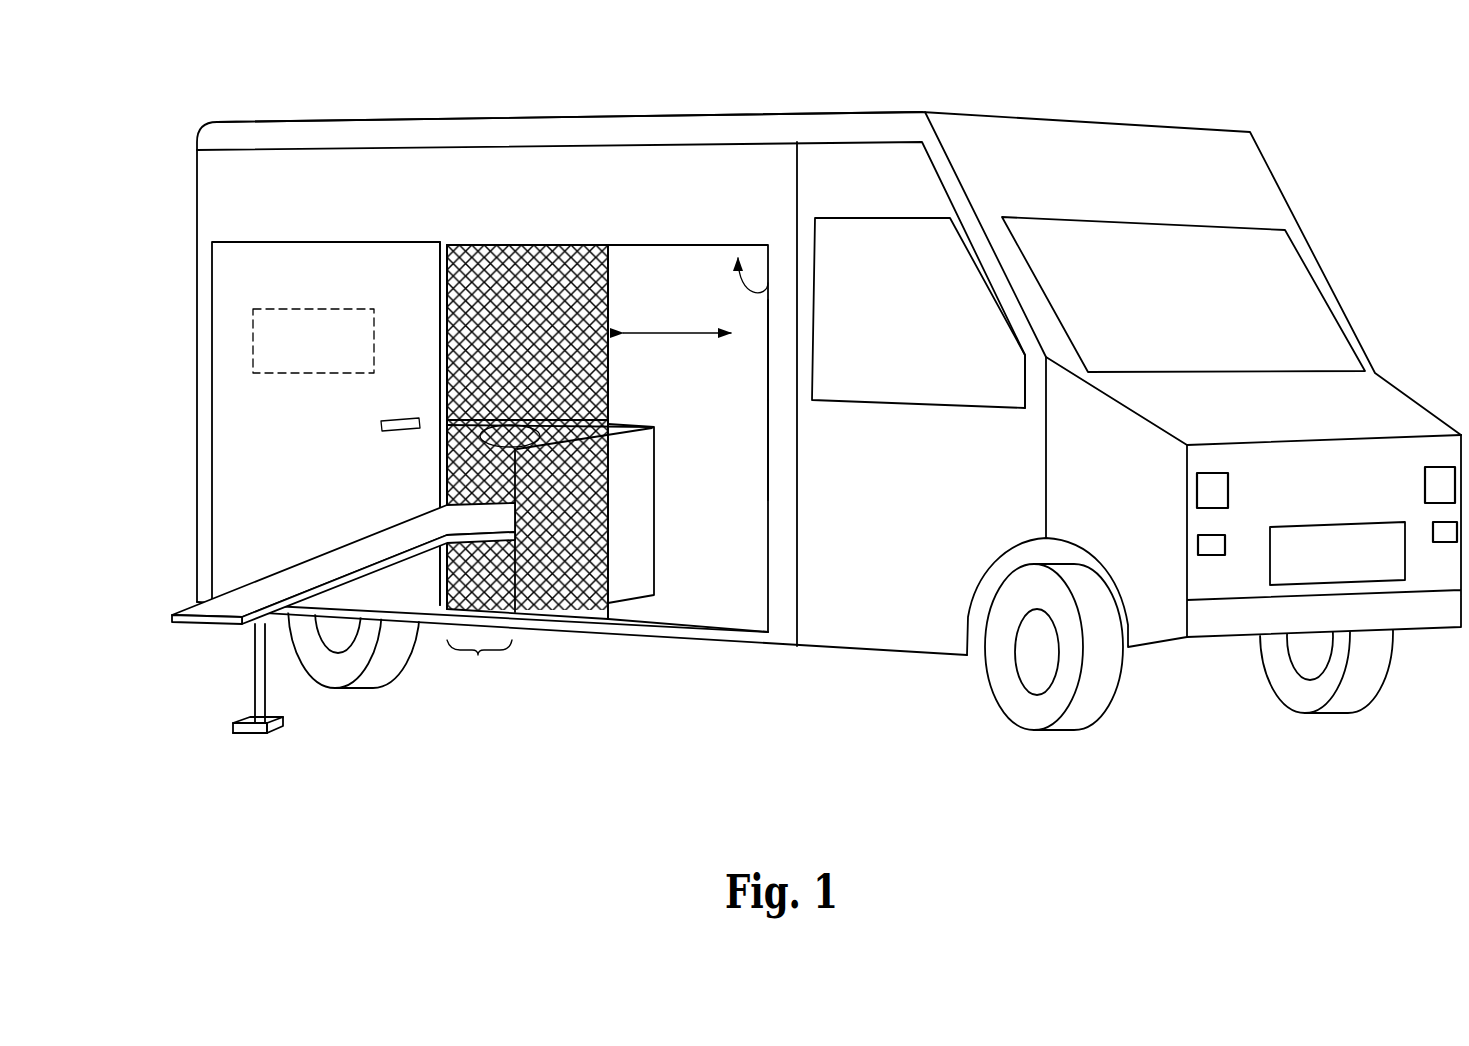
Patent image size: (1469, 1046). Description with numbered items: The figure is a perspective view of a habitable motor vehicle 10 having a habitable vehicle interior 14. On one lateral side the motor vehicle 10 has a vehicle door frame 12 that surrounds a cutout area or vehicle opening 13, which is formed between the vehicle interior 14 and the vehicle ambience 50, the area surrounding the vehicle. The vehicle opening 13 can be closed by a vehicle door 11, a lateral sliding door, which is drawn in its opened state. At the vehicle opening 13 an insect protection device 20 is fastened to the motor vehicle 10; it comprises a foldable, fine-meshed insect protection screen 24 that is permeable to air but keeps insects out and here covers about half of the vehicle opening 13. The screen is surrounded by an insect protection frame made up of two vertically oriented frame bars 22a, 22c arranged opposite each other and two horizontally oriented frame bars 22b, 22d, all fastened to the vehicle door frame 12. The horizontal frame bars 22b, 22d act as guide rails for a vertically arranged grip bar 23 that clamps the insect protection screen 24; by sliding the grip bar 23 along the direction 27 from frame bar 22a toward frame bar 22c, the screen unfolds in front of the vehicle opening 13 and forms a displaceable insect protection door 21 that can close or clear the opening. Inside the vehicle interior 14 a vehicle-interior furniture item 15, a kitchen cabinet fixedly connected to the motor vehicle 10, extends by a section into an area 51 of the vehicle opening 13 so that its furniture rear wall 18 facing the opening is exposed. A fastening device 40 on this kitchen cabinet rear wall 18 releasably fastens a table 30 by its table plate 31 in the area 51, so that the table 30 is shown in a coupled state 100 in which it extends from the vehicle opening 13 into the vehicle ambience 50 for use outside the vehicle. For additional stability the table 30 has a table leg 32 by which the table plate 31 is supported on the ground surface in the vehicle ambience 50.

The habitable motor vehicle 10 is at (612, 125).
The vehicle door 11 is at (243, 440).
The vehicle door frame 12 is at (765, 359).
The vehicle opening 13 is at (740, 560).
The vehicle interior 14 is at (687, 581).
The vehicle-interior furniture item 15 is at (630, 527).
The furniture rear wall 18 is at (447, 472).
The insect protection device 20 is at (501, 235).
The insect protection door 21 is at (612, 293).
The frame bar 22a is at (452, 327).
The frame bar 22b is at (770, 280).
The frame bar 22c is at (765, 458).
The frame bar 22d is at (703, 623).
The grip bar 23 is at (610, 398).
The insect protection screen 24 is at (549, 285).
The direction 27 is at (663, 333).
The table 30 is at (308, 622).
The table plate 31 is at (225, 608).
The table leg 32 is at (258, 698).
The fastening device 40 is at (584, 601).
The vehicle ambience 50 is at (473, 738).
The area of vehicle opening 51 is at (479, 659).
The coupled state 100 is at (392, 766).